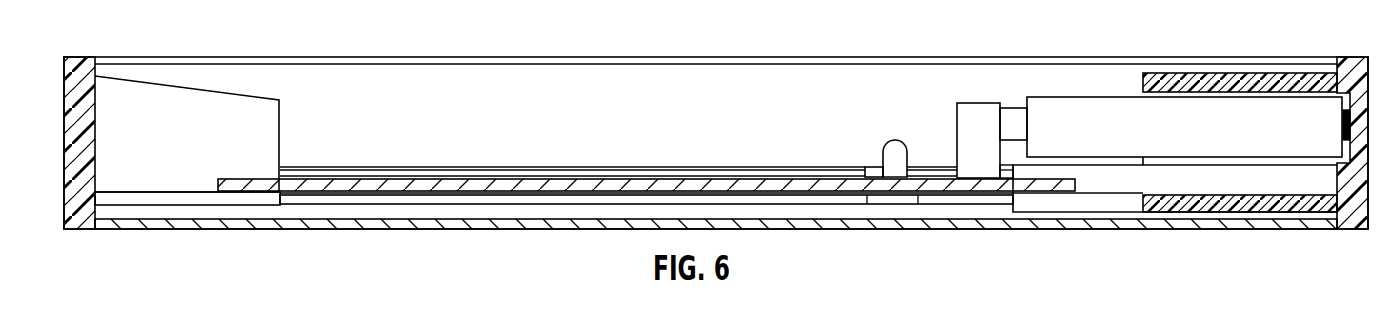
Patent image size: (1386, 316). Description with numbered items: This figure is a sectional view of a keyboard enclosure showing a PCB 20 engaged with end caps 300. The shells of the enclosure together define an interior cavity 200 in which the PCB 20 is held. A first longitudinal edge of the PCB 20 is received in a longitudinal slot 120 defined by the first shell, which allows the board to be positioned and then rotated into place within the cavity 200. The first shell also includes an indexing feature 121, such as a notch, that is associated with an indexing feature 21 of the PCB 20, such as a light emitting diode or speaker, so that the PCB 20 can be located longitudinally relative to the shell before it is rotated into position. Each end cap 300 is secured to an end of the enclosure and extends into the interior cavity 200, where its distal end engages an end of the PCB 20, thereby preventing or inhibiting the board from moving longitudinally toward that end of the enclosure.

The cavity 200 is at (561, 81).
The end cap 300 is at (185, 110).
The PCB 20 is at (720, 186).
The longitudinal slot 120 is at (333, 200).
The indexing feature 121 is at (876, 168).
The indexing feature 21 is at (894, 141).